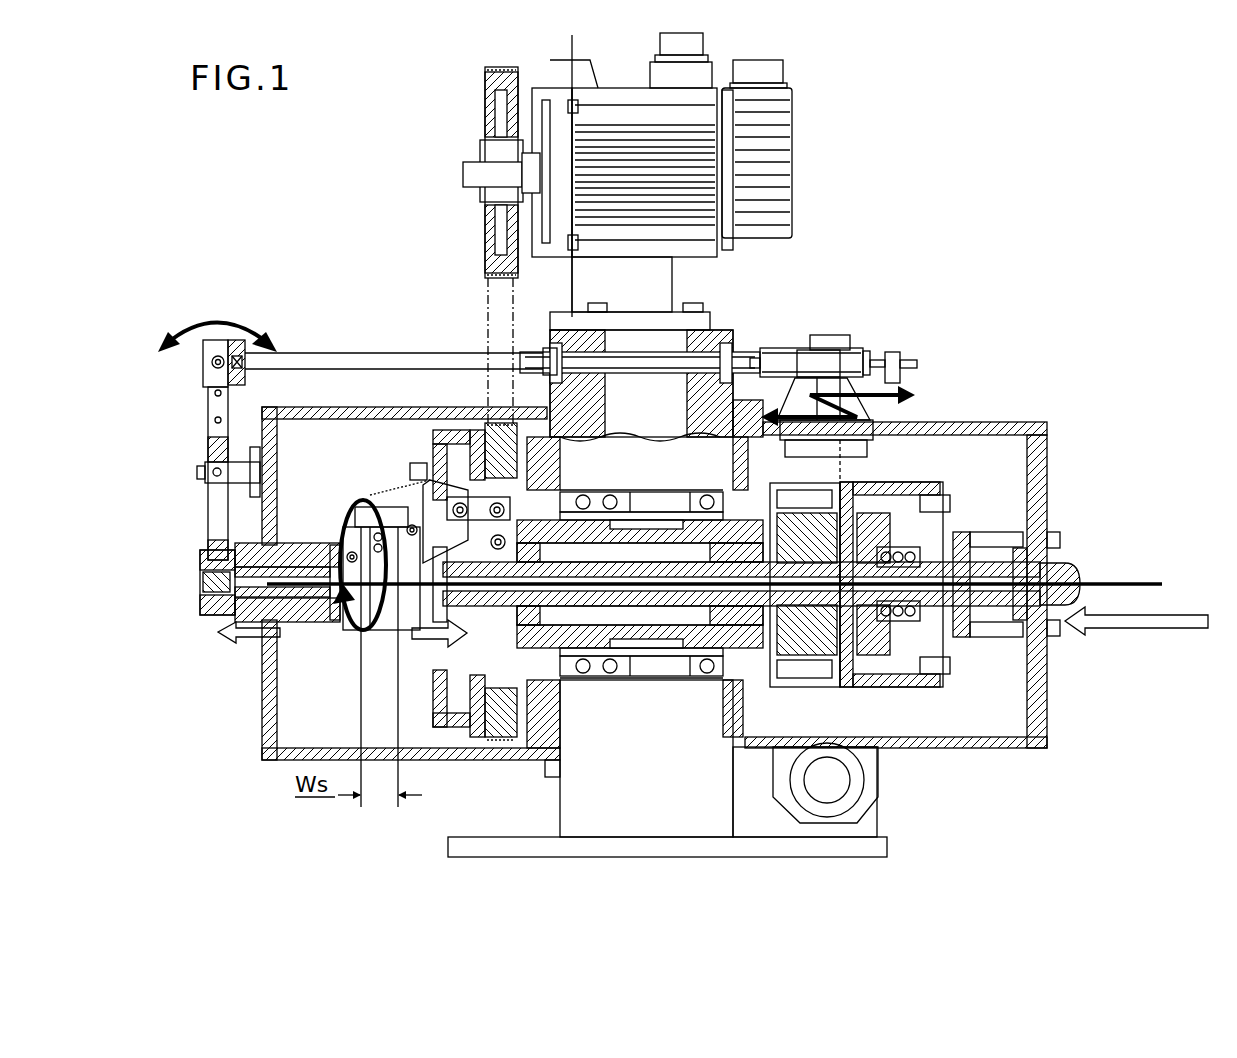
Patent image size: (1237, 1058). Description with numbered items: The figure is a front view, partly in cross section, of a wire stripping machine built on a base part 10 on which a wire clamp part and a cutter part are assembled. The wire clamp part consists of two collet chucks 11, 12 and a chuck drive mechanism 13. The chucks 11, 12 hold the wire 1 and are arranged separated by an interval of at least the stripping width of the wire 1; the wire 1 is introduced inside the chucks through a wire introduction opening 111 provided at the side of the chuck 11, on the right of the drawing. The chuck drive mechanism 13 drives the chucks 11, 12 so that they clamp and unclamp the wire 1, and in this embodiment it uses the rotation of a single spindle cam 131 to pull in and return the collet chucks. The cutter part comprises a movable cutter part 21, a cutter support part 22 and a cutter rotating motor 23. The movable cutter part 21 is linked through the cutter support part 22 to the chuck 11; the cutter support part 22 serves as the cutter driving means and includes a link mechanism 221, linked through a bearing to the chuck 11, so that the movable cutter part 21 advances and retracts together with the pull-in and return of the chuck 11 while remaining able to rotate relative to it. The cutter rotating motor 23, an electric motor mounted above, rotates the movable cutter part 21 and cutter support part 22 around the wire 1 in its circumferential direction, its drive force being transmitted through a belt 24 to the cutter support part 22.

The wire 1 is at (1152, 582).
The base part 10 is at (645, 787).
The chuck 11 is at (457, 607).
The wire introduction opening 111 is at (1087, 573).
The chuck 12 is at (320, 617).
The chuck drive mechanism 13 is at (832, 328).
The spindle cam 131 is at (843, 343).
The movable cutter part 21 is at (355, 538).
The cutter support part 22 is at (470, 430).
The link mechanism 221 is at (483, 507).
The cutter rotating motor 23 is at (620, 140).
The belt 24 is at (493, 300).